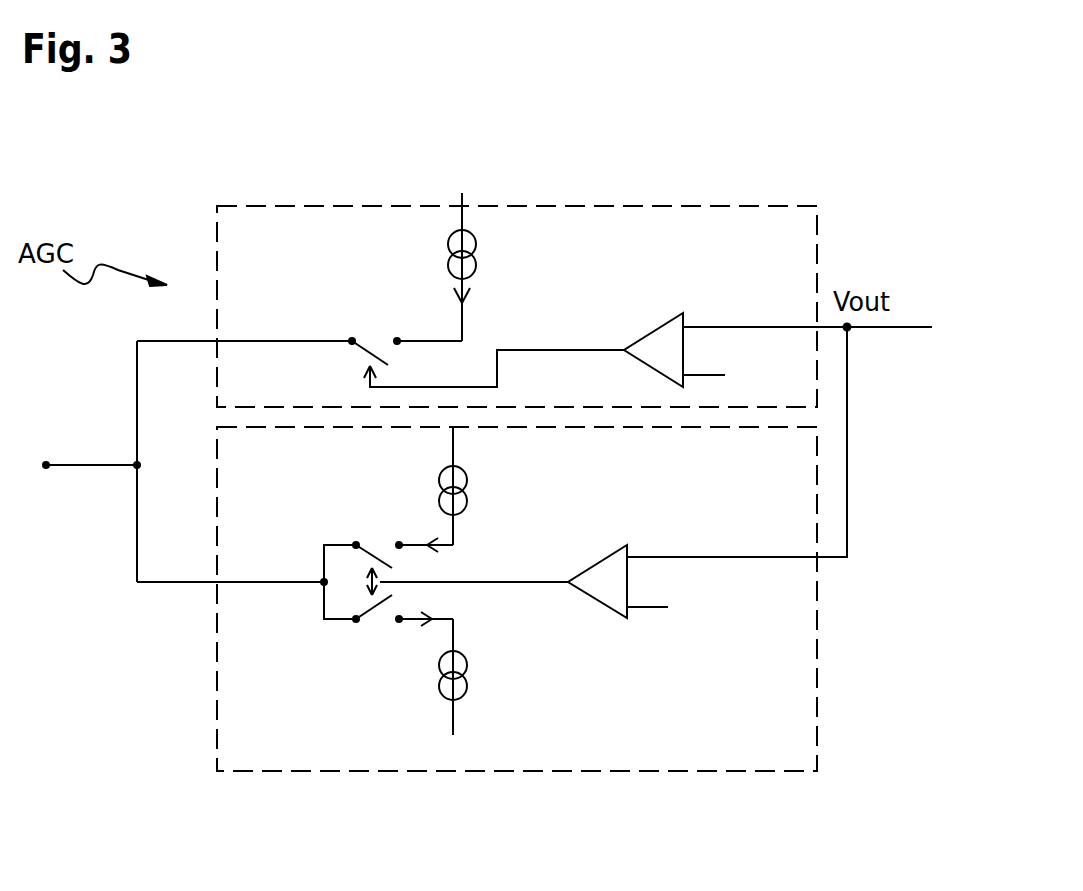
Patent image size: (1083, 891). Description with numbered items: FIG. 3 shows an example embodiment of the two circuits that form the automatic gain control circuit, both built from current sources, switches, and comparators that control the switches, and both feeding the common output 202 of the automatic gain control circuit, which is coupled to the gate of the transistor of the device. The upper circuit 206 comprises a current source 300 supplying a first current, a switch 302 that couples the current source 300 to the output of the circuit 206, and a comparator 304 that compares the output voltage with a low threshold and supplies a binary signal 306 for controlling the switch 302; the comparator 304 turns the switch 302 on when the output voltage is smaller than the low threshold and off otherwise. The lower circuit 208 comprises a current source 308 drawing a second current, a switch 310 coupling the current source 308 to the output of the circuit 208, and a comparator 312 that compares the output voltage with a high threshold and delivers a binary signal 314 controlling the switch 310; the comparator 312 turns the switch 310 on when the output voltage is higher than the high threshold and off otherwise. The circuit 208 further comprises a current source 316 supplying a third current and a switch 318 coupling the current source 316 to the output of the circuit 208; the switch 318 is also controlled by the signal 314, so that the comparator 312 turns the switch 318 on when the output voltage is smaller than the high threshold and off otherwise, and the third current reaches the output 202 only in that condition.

The output 202 is at (46, 462).
The circuit 206 is at (735, 205).
The circuit 208 is at (697, 771).
The current source 300 is at (477, 251).
The switch 302 is at (370, 340).
The comparator 304 is at (657, 343).
The binary signal 306 is at (494, 369).
The current source 308 is at (468, 686).
The switch 310 is at (365, 630).
The comparator 312 is at (603, 590).
The binary signal 314 is at (474, 568).
The current source 316 is at (468, 483).
The switch 318 is at (376, 540).